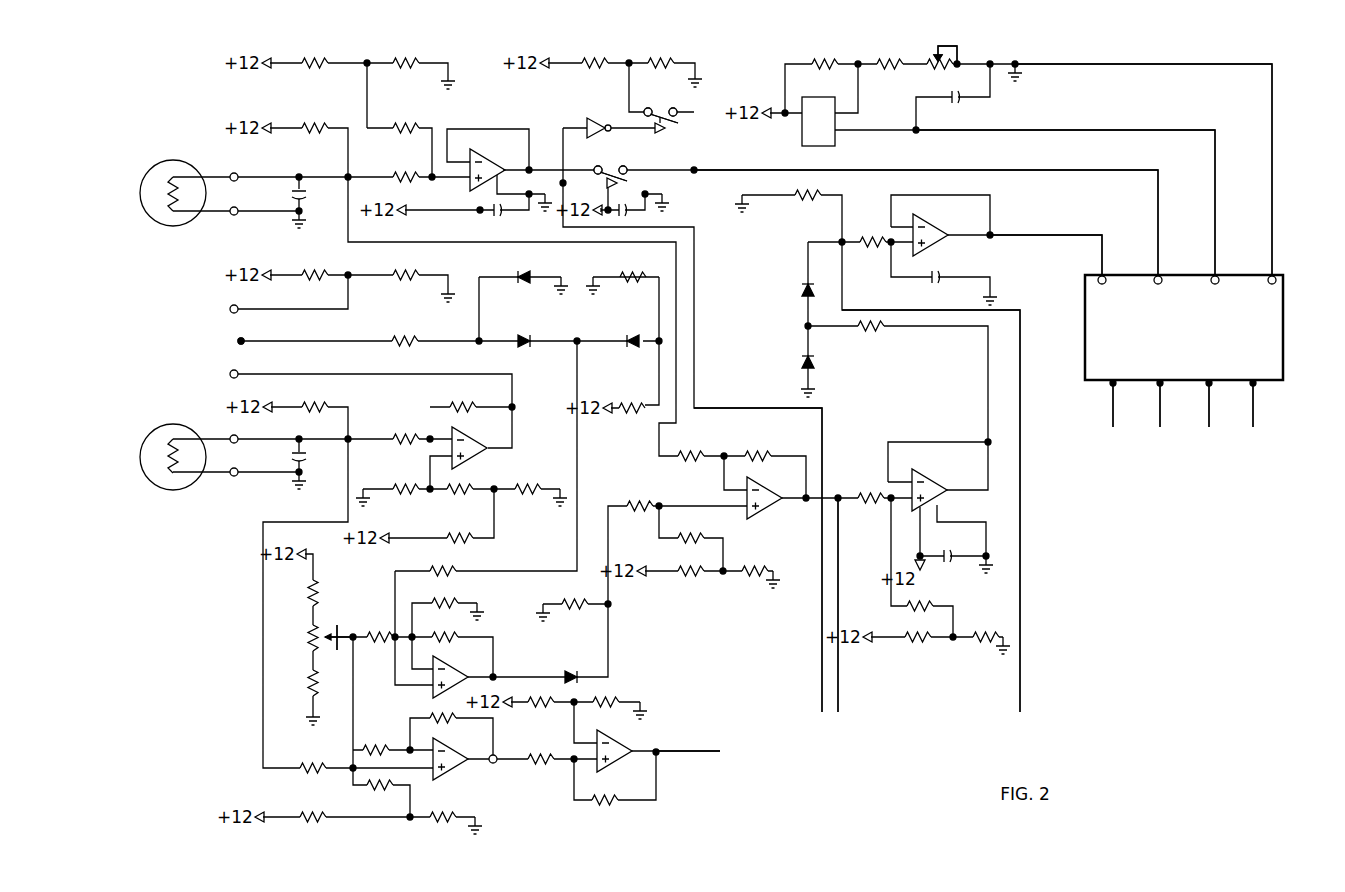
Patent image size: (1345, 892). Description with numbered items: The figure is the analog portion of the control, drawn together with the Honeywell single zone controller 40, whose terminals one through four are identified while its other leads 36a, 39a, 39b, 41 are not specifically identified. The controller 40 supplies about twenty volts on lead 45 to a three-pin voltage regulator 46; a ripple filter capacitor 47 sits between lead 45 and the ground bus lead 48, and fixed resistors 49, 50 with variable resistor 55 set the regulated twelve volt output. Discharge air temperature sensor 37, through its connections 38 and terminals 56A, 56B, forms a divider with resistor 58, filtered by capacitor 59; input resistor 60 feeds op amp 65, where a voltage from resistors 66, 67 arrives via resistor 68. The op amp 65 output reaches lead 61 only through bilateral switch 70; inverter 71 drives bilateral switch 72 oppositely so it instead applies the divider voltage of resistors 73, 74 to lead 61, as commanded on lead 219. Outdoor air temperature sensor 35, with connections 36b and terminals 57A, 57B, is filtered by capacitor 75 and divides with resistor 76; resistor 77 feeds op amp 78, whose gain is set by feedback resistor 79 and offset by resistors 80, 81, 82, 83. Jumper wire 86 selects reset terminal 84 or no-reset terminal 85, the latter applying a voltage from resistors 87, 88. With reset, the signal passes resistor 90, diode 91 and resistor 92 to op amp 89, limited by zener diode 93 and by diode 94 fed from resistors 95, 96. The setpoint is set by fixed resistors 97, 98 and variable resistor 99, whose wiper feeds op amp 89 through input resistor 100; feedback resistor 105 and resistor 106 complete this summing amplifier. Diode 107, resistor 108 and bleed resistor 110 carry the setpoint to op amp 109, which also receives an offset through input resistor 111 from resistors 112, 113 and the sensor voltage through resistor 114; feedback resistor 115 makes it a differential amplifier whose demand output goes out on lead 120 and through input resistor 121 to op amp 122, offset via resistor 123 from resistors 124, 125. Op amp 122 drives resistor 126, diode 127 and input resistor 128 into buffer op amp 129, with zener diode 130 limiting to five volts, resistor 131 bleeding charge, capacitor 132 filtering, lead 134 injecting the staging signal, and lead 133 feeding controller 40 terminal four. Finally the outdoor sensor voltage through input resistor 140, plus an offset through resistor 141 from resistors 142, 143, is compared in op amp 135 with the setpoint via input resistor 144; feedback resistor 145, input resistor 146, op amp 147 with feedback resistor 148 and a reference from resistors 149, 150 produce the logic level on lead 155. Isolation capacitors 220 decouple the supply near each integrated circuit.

The outdoor air temperature sensor 35 is at (162, 417).
The W973 output terminal 36a is at (1118, 418).
The sensor leads 36b is at (210, 429).
The discharge air temperature sensor 37 is at (154, 159).
The sensor leads 38 is at (207, 171).
The W973 output terminal 39a is at (1162, 418).
The W973 output terminal 39b is at (1209, 418).
The W973 control 40 is at (1284, 274).
The W973 output terminal 41 is at (1252, 418).
The lead 45 is at (1152, 130).
The three-pin voltage regulator 46 is at (802, 142).
The ripple filter capacitor 47 is at (958, 104).
The ground bus lead 48 is at (1068, 64).
The fixed resistor 49 is at (831, 70).
The fixed resistor 50 is at (887, 78).
The variable resistor 55 is at (938, 71).
The terminal 56A is at (236, 172).
The terminal 56B is at (236, 216).
The terminal 57A is at (234, 436).
The terminal 57B is at (236, 478).
The resistor 58 is at (322, 126).
The capacitor 59 is at (307, 202).
The input resistor 60 is at (405, 165).
The lead 61 is at (1126, 170).
The operational amplifier 65 is at (493, 164).
The resistor 66 is at (320, 68).
The resistor 67 is at (410, 72).
The resistor 68 is at (412, 124).
The bilateral switch 70 is at (612, 168).
The inverter 71 is at (584, 122).
The bilateral switch 72 is at (673, 109).
The resistor 73 is at (594, 70).
The resistor 74 is at (659, 70).
The transient filter capacitor 75 is at (307, 458).
The resistor 76 is at (318, 406).
The input resistor 77 is at (404, 440).
The operational amplifier 78 is at (472, 434).
The feedback resistor 79 is at (466, 406).
The resistor 80 is at (404, 487).
The resistor 81 is at (468, 487).
The resistor 82 is at (527, 487).
The resistor 83 is at (462, 535).
The reset terminal 84 is at (232, 348).
The no-reset terminal 85 is at (238, 305).
The jumper wire 86 is at (230, 341).
The resistor 87 is at (316, 275).
The resistor 88 is at (400, 275).
The operational amplifier 89 is at (455, 665).
The resistor 90 is at (404, 338).
The diode 91 is at (524, 338).
The resistor 92 is at (445, 570).
The zener diode 93 is at (526, 276).
The diode 94 is at (636, 338).
The resistor 95 is at (634, 406).
The resistor 96 is at (636, 276).
The fixed resistor 97 is at (318, 594).
The fixed resistor 98 is at (298, 683).
The variable resistor 99 is at (310, 639).
The input resistor 100 is at (376, 634).
The feedback resistor 105 is at (446, 635).
The resistor 106 is at (446, 602).
The diode 107 is at (570, 672).
The resistor 108 is at (641, 504).
The operational amplifier 109 is at (771, 491).
The resistor 110 is at (574, 602).
The input resistor 111 is at (690, 536).
The resistor 112 is at (692, 564).
The resistor 113 is at (760, 569).
The resistor 114 is at (690, 454).
The feedback resistor 115 is at (760, 454).
The lead 120 is at (840, 704).
The input resistor 121 is at (866, 497).
The operational amplifier 122 is at (940, 481).
The resistor 123 is at (926, 603).
The resistor 124 is at (912, 635).
The resistor 125 is at (982, 635).
The resistor 126 is at (873, 334).
The diode 127 is at (802, 290).
The input resistor 128 is at (866, 240).
The operational amplifier 129 is at (934, 221).
The zener diode 130 is at (802, 360).
The resistor 131 is at (808, 204).
The capacitor 132 is at (941, 271).
The lead 133 is at (1076, 231).
The lead 134 is at (1022, 704).
The operational amplifier 135 is at (458, 753).
The input resistor 140 is at (312, 767).
The resistor 141 is at (375, 796).
The resistor 142 is at (312, 817).
The resistor 143 is at (450, 817).
The input resistor 144 is at (378, 749).
The feedback resistor 145 is at (452, 717).
The input resistor 146 is at (540, 757).
The operational amplifier 147 is at (616, 738).
The feedback resistor 148 is at (616, 797).
The resistor 149 is at (541, 702).
The resistor 150 is at (608, 702).
The lead 155 is at (708, 749).
The lead 219 is at (818, 704).
The isolation capacitor 220 is at (496, 217).